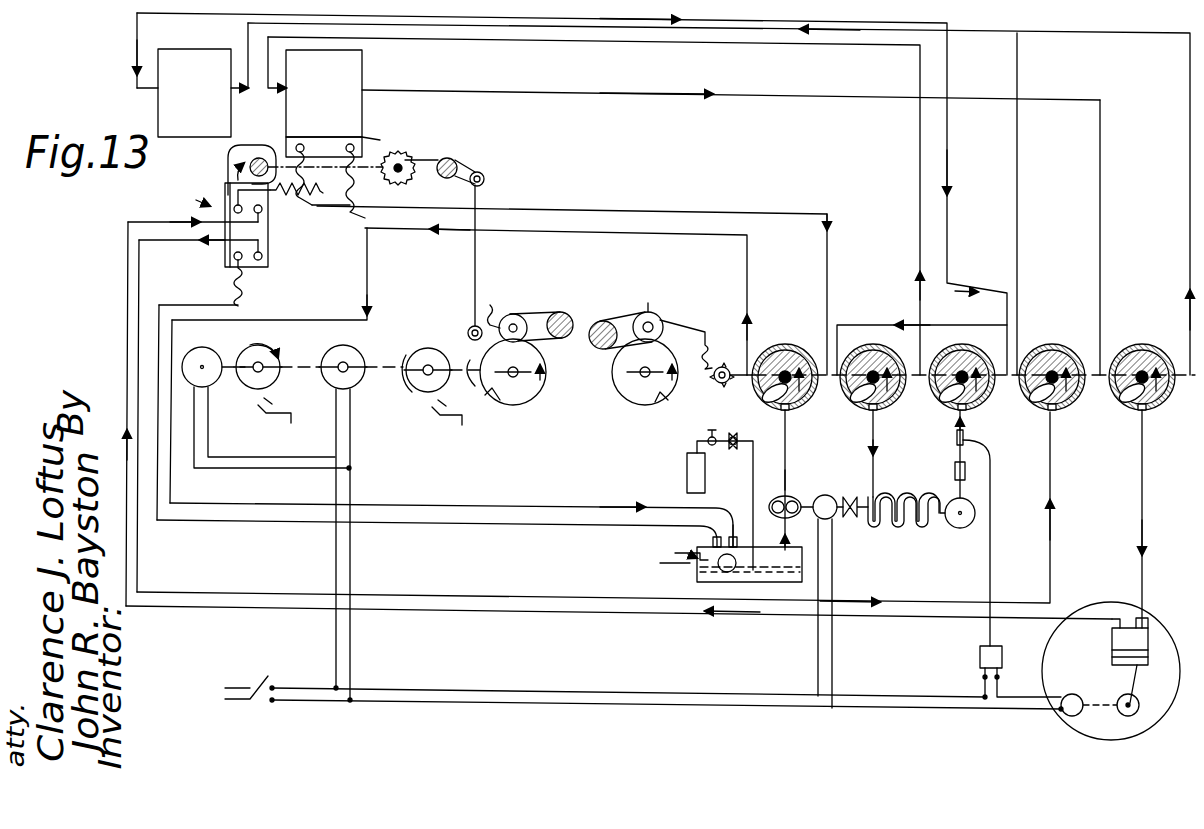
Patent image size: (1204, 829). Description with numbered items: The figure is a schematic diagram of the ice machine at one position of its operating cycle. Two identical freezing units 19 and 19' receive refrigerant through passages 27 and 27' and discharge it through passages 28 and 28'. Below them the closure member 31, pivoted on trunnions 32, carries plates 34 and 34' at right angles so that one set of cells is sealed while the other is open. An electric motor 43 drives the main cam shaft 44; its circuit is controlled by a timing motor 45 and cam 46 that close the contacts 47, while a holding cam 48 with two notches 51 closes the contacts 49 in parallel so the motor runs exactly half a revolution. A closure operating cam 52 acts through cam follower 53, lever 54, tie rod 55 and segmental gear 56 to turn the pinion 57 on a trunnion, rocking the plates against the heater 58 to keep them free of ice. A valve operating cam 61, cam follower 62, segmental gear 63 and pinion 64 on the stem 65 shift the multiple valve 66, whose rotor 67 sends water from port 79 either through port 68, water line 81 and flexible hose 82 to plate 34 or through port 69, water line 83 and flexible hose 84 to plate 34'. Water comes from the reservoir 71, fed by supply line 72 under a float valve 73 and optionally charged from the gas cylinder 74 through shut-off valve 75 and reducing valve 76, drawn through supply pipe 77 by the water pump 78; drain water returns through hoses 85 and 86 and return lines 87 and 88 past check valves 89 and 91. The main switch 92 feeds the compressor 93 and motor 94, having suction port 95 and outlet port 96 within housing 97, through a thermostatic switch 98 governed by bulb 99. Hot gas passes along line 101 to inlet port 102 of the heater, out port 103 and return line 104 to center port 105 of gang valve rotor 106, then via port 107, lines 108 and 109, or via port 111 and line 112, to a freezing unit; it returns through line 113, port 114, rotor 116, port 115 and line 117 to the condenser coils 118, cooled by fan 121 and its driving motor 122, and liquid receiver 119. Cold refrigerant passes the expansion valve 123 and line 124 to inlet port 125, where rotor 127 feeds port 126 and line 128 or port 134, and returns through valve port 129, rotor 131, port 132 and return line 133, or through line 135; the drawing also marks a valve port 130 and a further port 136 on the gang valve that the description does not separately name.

The freezing unit 19 is at (340, 93).
The freezing unit 19' is at (194, 80).
The passage 27 is at (294, 63).
The passage 27' is at (130, 77).
The passage 28 is at (731, 84).
The passage 28' is at (224, 55).
The closure member 31 is at (270, 146).
The trunnions 32 is at (248, 165).
The plate 34 is at (381, 122).
The plate 34' is at (224, 226).
The electric motor 43 is at (352, 352).
The main cam shaft 44 is at (500, 400).
The timing motor 45 is at (218, 352).
The cam 46 is at (280, 344).
The contacts 47 is at (258, 408).
The holding cam 48 is at (432, 348).
The contacts 49 is at (430, 404).
The notches 51 is at (405, 380).
The closure operating cam 52 is at (535, 398).
The cam follower 53 is at (513, 314).
The lever 54 is at (560, 312).
The tie rod 55 is at (475, 290).
The segmental gear 56 is at (436, 150).
The pinion 57 is at (405, 152).
The heater 58 is at (270, 255).
The valve operating cam 61 is at (625, 394).
The cam follower 62 is at (648, 312).
The segmental gear 63 is at (706, 335).
The pinion 64 is at (716, 385).
The stem 65 is at (736, 390).
The multiple valve 66 is at (830, 242).
The valve rotor 67 is at (798, 334).
The port 68 is at (760, 398).
The port 69 is at (796, 412).
The water reservoir 71 is at (660, 563).
The water supply line 72 is at (672, 553).
The float valve 73 is at (720, 570).
The compressed gas cylinder 74 is at (687, 485).
The shut-off valve 75 is at (708, 440).
The reducing valve 76 is at (731, 447).
The supply pipe 77 is at (787, 460).
The water pump 78 is at (788, 490).
The port 79 is at (790, 412).
The water line 81 is at (605, 230).
The flexible hose 82 is at (325, 160).
The water line 83 is at (668, 212).
The flexible hose 84 is at (262, 212).
The flexible hose connection 85 is at (350, 188).
The flexible hose connection 86 is at (242, 298).
The water return line 87 is at (434, 508).
The water return line 88 is at (410, 524).
The check valve 89 is at (720, 537).
The check valve 91 is at (736, 535).
The main switch 92 is at (262, 702).
The compressor 93 is at (1112, 660).
The motor 94 is at (1080, 700).
The suction port 95 is at (1148, 620).
The outlet port 96 is at (1112, 636).
The housing 97 is at (1095, 738).
The thermostatic switch 98 is at (980, 660).
The temperature responsive bulb 99 is at (975, 442).
The line 101 is at (515, 612).
The inlet port 102 is at (270, 232).
The port 103 is at (262, 260).
The return line 104 is at (503, 592).
The center port 105 is at (1055, 415).
The gang valve rotor 106 is at (1057, 346).
The port 107 is at (1000, 405).
The line 108 is at (1017, 140).
The line 109 is at (625, 20).
The port 111 is at (1072, 405).
The line 112 is at (545, 97).
The line 113 is at (692, 42).
The port 114 is at (856, 405).
The port 115 is at (870, 412).
The rotor 116 is at (880, 338).
The line 117 is at (873, 492).
The condenser coils 118 is at (905, 528).
The liquid receiver 119 is at (963, 528).
The fan 121 is at (838, 535).
The valve 122 is at (850, 540).
The expansion valve 123 is at (955, 468).
The line 124 is at (957, 440).
The inlet port 125 is at (955, 420).
The port 126 is at (932, 375).
The valve rotor 127 is at (980, 352).
The line 128 is at (532, 42).
The valve port 129 is at (1080, 405).
The port 130 is at (950, 405).
The rotor 131 is at (1148, 346).
The port 132 is at (1148, 408).
The return line 133 is at (1142, 522).
The port 134 is at (995, 408).
The line 135 is at (1190, 222).
The port 136 is at (1162, 405).